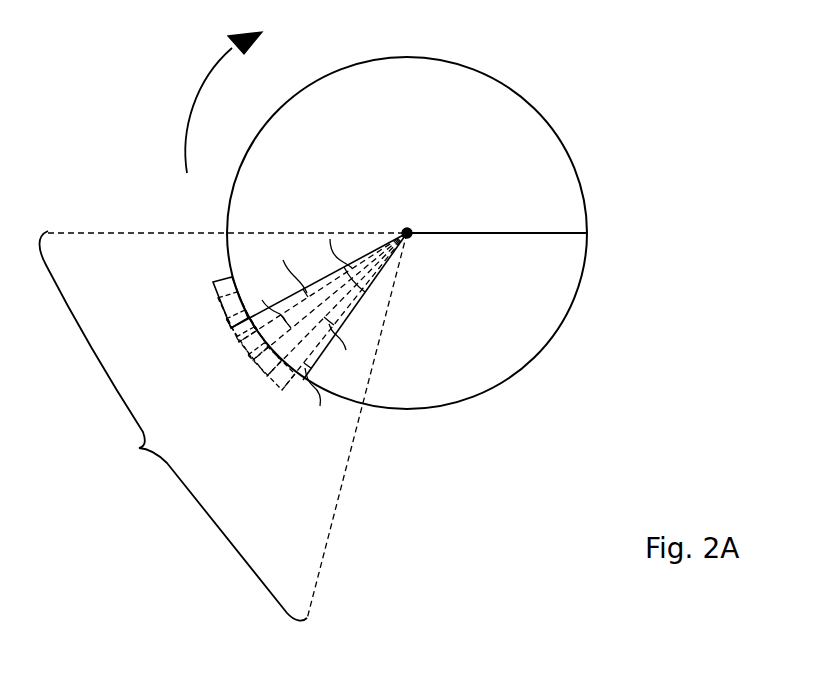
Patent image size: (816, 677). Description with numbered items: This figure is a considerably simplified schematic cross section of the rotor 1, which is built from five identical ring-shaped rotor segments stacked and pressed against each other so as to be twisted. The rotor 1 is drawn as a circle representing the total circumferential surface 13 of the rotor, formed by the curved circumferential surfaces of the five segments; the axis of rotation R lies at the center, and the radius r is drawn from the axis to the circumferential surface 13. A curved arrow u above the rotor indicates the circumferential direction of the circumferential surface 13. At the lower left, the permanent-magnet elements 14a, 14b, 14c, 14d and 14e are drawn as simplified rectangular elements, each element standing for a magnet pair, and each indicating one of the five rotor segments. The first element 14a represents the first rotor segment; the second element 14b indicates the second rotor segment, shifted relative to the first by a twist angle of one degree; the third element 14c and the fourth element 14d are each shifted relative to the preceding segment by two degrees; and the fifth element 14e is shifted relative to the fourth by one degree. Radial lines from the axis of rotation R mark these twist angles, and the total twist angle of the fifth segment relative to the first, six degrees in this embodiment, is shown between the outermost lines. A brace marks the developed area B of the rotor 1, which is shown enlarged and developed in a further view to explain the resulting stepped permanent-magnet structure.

The rotor 1 is at (594, 102).
The circumferential surface of the rotor 13 is at (580, 278).
The permanent-magnet element 14a is at (283, 387).
The permanent-magnet element 14b is at (268, 372).
The permanent-magnet element 14c is at (250, 350).
The permanent-magnet element 14d is at (236, 334).
The permanent-magnet element 14e is at (222, 310).
The axis of rotation R is at (408, 229).
The radius r is at (477, 234).
The circumferential direction u is at (214, 102).
The developed area B is at (174, 426).